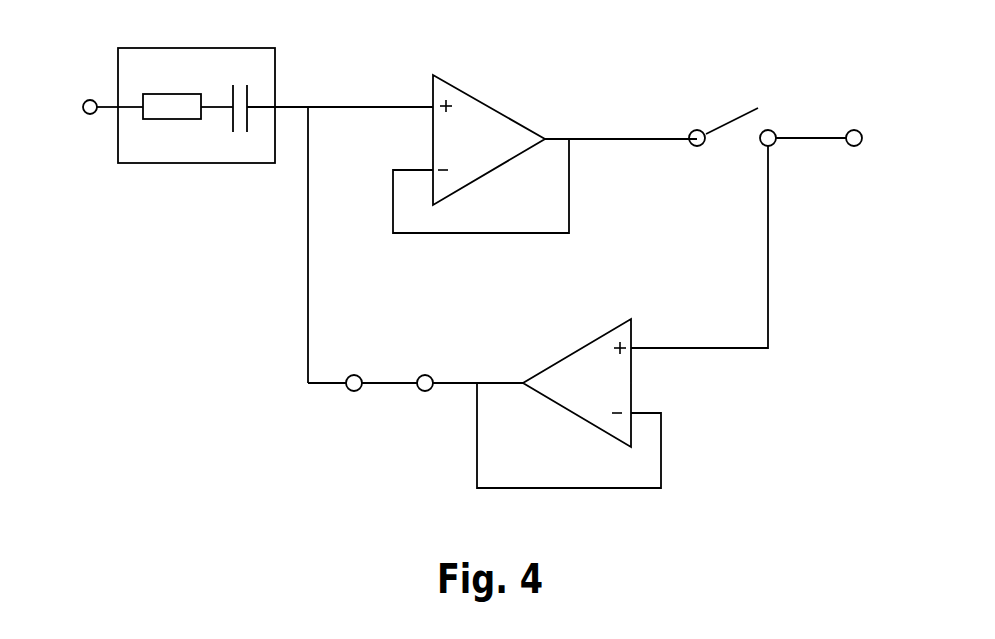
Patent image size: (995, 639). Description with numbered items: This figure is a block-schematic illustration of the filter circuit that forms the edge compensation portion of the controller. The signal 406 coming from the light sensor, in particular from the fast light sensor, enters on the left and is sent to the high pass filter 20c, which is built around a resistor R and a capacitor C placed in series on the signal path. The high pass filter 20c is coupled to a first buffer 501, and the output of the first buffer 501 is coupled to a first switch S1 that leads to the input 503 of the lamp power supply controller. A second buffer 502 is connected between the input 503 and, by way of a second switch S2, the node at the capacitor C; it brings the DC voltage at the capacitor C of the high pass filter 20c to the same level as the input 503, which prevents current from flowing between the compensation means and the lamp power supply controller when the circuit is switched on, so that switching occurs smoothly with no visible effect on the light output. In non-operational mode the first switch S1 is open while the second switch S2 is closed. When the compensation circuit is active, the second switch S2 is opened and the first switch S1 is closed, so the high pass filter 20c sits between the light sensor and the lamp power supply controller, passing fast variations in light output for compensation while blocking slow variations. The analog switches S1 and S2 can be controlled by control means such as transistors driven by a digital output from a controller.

The high pass filter 20c is at (170, 48).
The signal 406 is at (112, 110).
The resistor R is at (175, 92).
The capacitor C is at (332, 95).
The first buffer 501 is at (462, 145).
The second buffer 502 is at (567, 393).
The input of the lamp power supply controller 503 is at (852, 130).
The first switch S1 is at (732, 149).
The second switch S2 is at (415, 403).